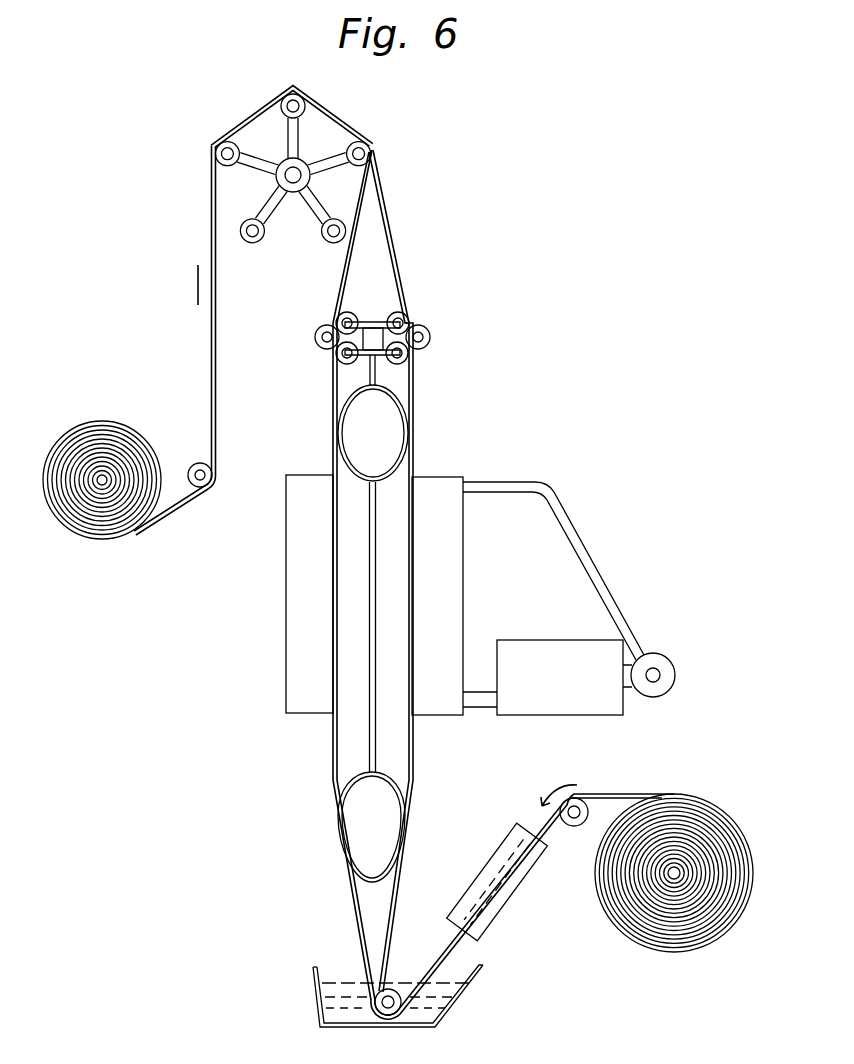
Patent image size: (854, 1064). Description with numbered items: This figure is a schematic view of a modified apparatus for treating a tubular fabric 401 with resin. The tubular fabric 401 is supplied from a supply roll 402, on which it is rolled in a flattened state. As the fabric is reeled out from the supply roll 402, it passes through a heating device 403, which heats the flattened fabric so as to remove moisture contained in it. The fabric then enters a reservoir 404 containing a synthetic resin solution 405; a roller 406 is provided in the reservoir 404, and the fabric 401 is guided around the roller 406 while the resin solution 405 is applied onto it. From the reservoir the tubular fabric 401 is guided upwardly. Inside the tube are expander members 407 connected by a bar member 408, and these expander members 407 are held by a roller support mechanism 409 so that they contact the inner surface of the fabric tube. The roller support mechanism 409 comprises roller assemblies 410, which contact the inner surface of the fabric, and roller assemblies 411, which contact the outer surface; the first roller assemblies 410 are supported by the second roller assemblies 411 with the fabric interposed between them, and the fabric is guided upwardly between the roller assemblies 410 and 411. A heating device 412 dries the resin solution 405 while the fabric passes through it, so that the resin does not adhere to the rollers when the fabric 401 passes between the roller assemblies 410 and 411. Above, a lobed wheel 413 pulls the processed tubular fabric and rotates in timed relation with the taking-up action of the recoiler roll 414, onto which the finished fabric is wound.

The tubular fabric 401 is at (630, 792).
The supply roll 402 is at (674, 876).
The heating device 403 is at (486, 872).
The reservoir 404 is at (318, 1015).
The synthetic resin solution 405 is at (440, 1002).
The roller 406 is at (372, 998).
The expander members 407 is at (397, 431).
The bar member 408 is at (369, 735).
The roller support mechanism 409 is at (372, 322).
The roller assemblies 410 is at (338, 317).
The roller assemblies 411 is at (315, 339).
The heating device 412 is at (445, 478).
The lobed wheel 413 is at (330, 157).
The recoiler roll 414 is at (104, 484).